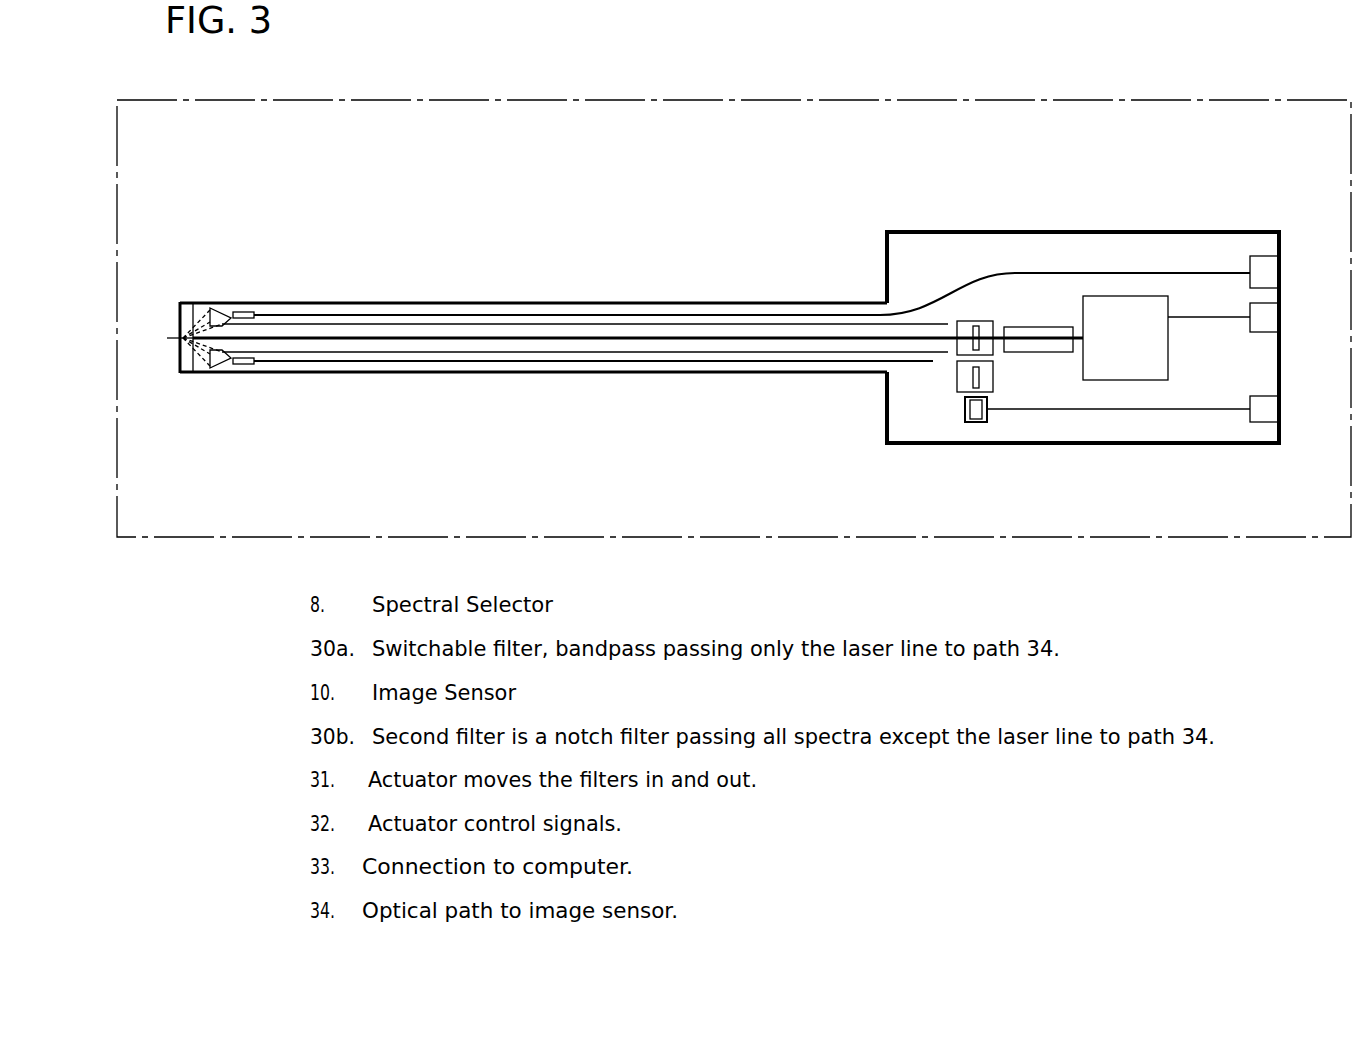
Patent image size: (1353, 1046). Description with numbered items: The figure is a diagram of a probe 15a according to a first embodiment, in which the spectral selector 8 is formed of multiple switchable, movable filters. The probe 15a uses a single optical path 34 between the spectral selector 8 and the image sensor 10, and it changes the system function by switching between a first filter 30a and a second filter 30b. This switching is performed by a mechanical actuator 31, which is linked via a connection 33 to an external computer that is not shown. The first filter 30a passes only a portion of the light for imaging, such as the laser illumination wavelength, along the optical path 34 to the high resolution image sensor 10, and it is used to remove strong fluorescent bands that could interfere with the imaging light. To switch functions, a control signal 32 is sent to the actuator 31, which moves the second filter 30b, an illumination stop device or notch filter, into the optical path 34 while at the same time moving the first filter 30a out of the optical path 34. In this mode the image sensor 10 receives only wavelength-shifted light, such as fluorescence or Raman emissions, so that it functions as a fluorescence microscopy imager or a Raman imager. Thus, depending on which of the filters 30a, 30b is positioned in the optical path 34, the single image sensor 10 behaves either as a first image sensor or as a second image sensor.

The probe 15a is at (734, 275).
The spectral selector 8 is at (936, 321).
The first filter 30a is at (890, 296).
The image sensor 10 is at (1214, 281).
The second filter 30b is at (893, 404).
The actuator 31 is at (896, 454).
The control signal 32 is at (1114, 454).
The connection 33 is at (1283, 447).
The optical path 34 is at (1088, 255).